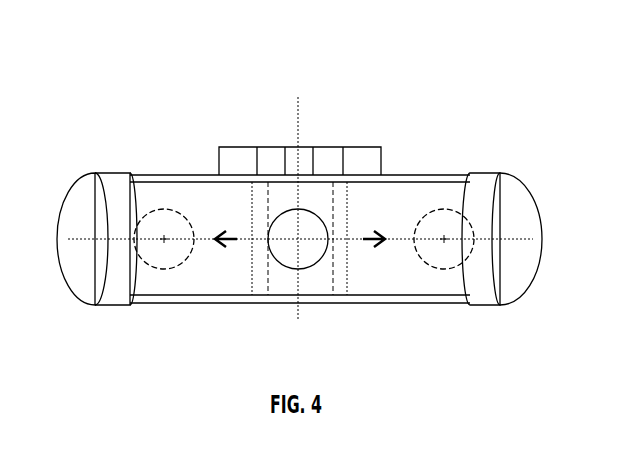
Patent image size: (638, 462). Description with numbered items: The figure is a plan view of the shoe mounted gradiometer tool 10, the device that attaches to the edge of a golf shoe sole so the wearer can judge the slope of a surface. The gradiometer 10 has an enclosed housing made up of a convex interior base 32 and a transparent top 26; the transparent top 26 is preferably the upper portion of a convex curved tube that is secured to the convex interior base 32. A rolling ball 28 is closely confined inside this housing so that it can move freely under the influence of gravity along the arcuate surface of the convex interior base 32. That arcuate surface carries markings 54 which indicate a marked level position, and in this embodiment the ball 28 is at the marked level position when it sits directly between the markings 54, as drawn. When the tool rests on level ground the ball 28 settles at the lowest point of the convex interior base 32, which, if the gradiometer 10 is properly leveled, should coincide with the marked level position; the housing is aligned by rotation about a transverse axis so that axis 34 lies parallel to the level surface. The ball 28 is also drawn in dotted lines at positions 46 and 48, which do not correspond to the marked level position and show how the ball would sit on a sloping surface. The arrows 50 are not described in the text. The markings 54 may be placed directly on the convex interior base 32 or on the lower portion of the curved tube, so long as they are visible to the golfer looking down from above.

The shoe mounted gradiometer tool 10 is at (480, 305).
The transparent top 26 is at (183, 280).
The rolling ball 28 is at (311, 209).
The convex interior base 32 is at (230, 285).
The axis 34 is at (525, 238).
The ball position 46 is at (164, 208).
The ball position 48 is at (453, 212).
The flow direction 50 is at (298, 275).
The markings 54 is at (258, 192).